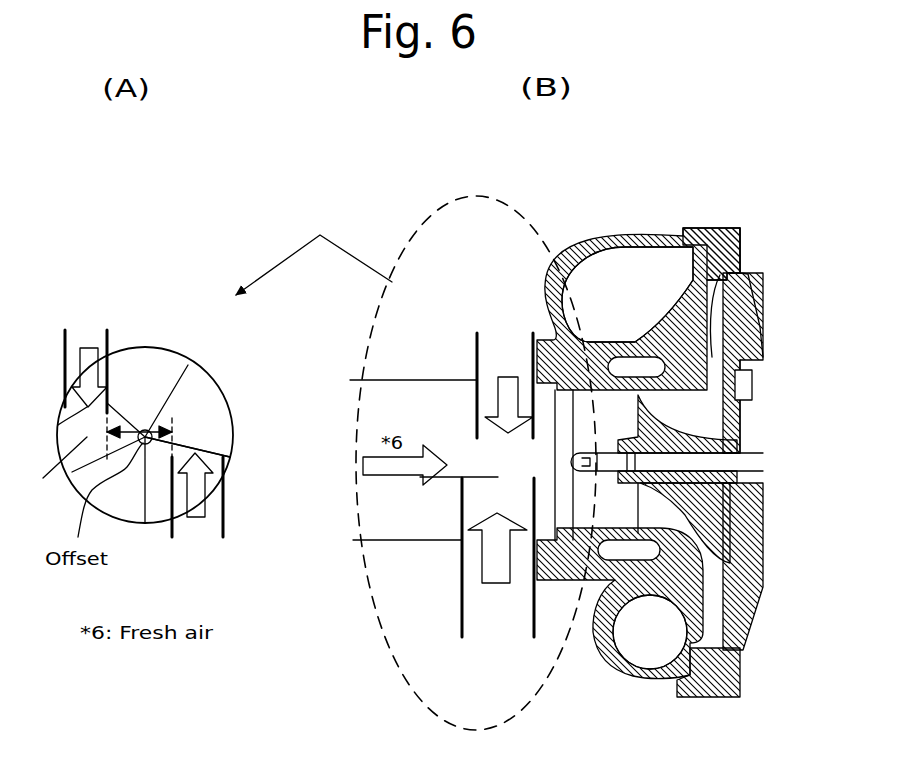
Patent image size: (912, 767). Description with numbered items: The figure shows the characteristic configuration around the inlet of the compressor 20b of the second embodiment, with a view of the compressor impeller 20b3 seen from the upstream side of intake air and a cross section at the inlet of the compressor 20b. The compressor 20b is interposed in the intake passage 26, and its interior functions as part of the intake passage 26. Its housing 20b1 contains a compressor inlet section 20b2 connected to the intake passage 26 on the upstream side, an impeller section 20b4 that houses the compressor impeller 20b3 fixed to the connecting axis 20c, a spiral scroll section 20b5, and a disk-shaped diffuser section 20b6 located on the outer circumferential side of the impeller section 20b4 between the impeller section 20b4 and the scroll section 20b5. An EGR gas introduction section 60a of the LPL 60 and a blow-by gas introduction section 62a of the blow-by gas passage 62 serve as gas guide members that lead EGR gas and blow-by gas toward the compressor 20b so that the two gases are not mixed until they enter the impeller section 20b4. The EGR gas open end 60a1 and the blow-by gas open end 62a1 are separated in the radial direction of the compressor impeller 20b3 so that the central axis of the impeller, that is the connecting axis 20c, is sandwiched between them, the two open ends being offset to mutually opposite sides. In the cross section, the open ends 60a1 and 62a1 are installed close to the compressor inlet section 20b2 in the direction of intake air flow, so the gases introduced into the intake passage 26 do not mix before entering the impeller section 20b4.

The compressor 20b is at (663, 211).
The housing 20b1 is at (708, 225).
The compressor inlet section 20b2 is at (593, 587).
The compressor impeller 20b3 is at (200, 385).
The impeller section 20b4 is at (727, 337).
The scroll section 20b5 is at (600, 270).
The diffuser section 20b6 is at (745, 275).
The connecting axis 20c is at (737, 455).
The blow-by gas passage 62 is at (280, 311).
The blow-by gas introduction section 62a is at (103, 345).
The blow-by gas open end 62a1 is at (487, 440).
The LPL 60 is at (380, 603).
The EGR gas introduction section 60a is at (213, 525).
The EGR gas open end 60a1 is at (223, 460).
The intake passage 26 is at (410, 527).